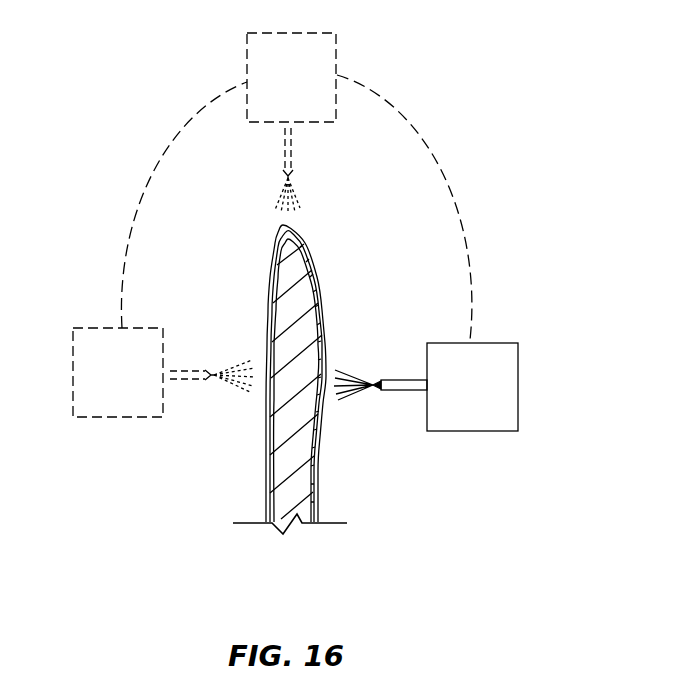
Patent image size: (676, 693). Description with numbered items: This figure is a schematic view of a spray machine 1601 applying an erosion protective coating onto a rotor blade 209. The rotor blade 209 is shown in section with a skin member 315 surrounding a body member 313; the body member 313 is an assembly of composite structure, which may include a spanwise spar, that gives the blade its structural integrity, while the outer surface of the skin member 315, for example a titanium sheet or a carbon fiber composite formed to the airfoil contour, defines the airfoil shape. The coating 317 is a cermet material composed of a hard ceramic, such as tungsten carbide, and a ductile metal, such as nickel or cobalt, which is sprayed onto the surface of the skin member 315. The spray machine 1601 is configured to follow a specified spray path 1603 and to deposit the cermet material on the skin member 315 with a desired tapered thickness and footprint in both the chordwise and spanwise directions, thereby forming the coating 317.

The rotor blade 209 is at (262, 381).
The body member 313 is at (288, 472).
The skin member 315 is at (316, 491).
The erosion protective coating 317 is at (318, 272).
The spray machine 1601 is at (505, 333).
The spray path 1603 is at (432, 167).